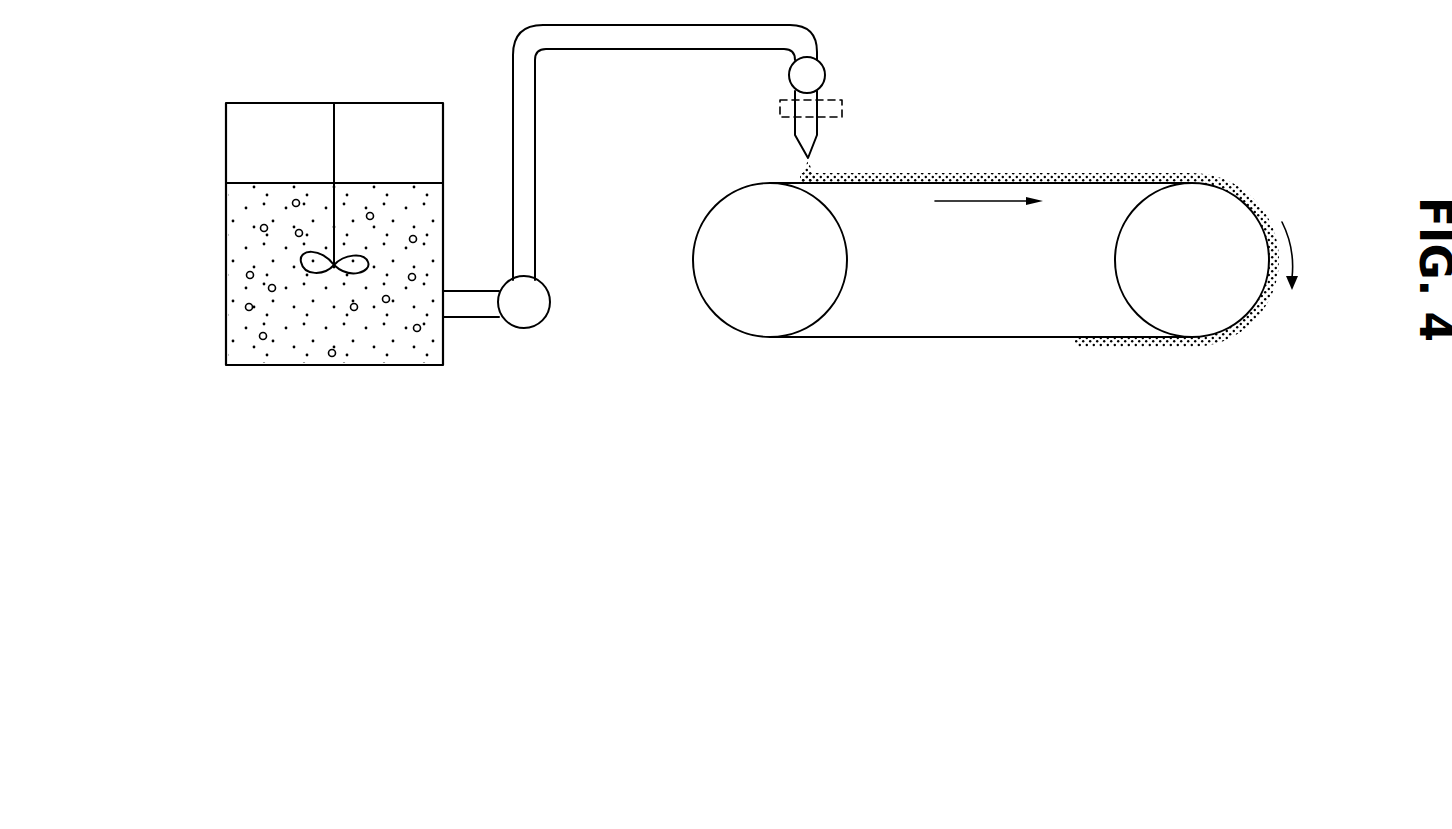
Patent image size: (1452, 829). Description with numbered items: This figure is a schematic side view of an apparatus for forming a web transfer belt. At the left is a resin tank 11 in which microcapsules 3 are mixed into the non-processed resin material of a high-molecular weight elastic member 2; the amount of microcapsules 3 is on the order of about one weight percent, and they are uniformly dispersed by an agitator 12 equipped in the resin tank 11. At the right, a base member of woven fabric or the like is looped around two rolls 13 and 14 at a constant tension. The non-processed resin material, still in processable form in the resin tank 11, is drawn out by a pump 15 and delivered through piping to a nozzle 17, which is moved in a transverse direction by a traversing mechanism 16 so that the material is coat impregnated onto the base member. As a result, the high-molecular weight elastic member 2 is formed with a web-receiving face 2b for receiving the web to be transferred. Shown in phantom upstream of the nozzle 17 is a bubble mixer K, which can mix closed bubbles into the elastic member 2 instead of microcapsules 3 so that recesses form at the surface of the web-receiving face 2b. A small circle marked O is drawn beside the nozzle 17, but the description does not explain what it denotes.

The resin tank 11 is at (223, 213).
The high-molecular weight elastic member 2 is at (388, 347).
The microcapsules 3 is at (260, 338).
The agitator 12 is at (316, 268).
The pump 15 is at (530, 318).
The traversing mechanism 16 is at (815, 72).
The nozzle 17 is at (805, 130).
The bubble mixer K is at (845, 103).
The atmosphere O is at (852, 153).
The roll 13 is at (790, 315).
The roll 14 is at (1215, 318).
The web-receiving face 2b is at (935, 338).